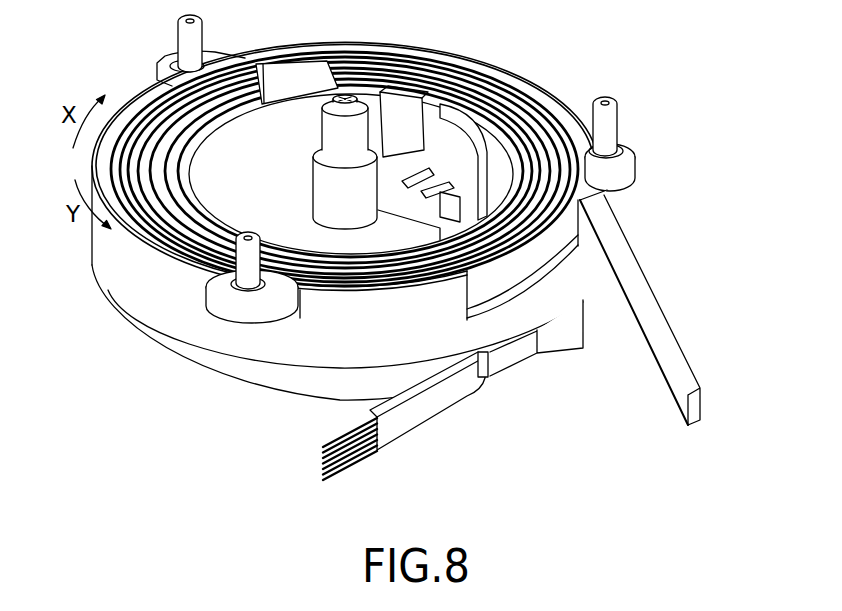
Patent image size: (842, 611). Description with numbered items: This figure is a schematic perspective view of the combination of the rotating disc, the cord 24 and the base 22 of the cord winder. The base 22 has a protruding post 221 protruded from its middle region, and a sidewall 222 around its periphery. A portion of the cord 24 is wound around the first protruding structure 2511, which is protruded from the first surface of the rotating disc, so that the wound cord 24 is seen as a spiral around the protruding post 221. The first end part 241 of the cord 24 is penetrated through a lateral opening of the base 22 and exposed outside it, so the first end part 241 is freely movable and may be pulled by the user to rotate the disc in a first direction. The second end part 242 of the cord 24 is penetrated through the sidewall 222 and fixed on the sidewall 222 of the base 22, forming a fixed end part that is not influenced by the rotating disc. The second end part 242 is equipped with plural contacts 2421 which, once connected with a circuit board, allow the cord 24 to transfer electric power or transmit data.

The base 22 is at (183, 358).
The protruding post 221 is at (347, 127).
The sidewall 222 is at (495, 330).
The cord 24 is at (510, 94).
The first end part 241 is at (687, 376).
The second end part 242 is at (397, 420).
The plural contacts 2421 is at (357, 456).
The first protruding structure 2511 is at (220, 143).